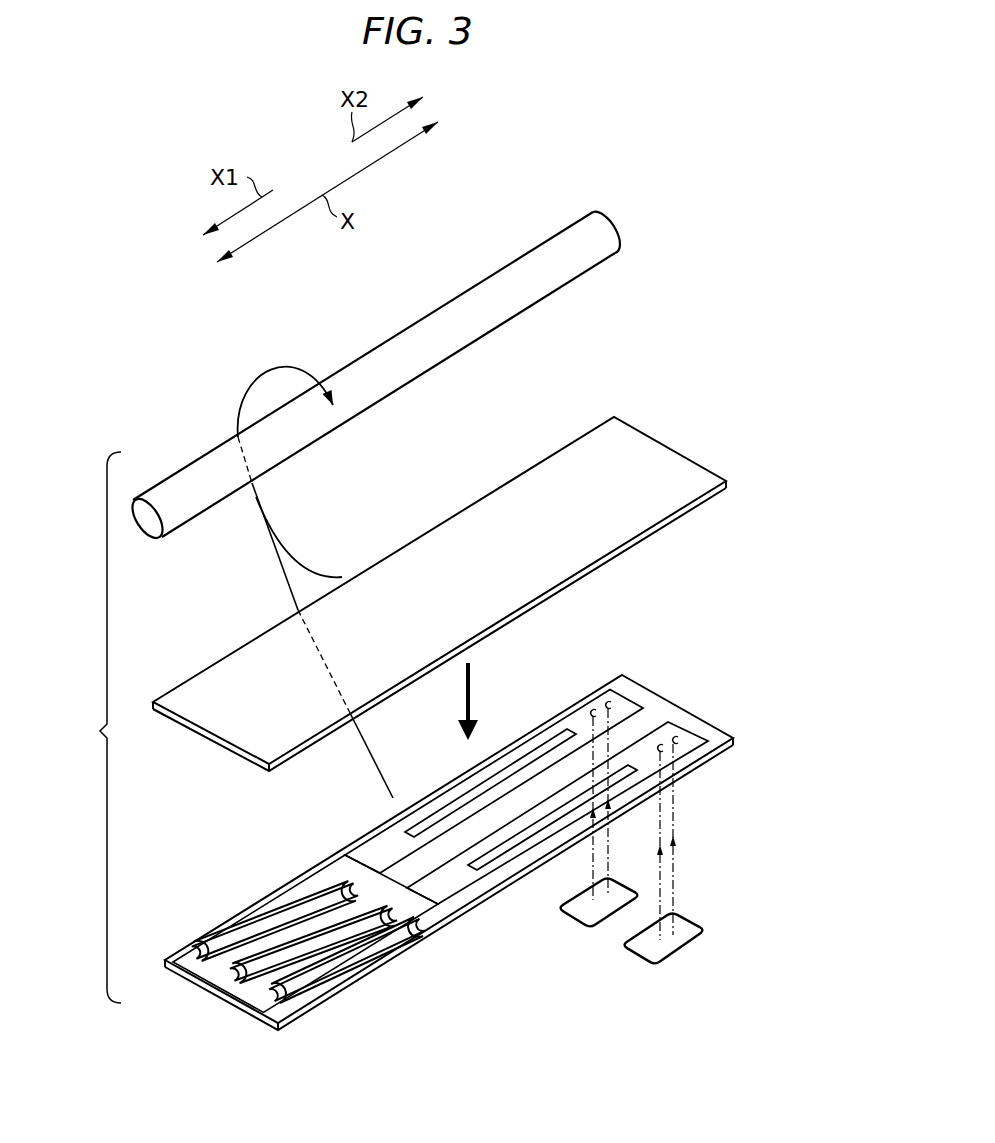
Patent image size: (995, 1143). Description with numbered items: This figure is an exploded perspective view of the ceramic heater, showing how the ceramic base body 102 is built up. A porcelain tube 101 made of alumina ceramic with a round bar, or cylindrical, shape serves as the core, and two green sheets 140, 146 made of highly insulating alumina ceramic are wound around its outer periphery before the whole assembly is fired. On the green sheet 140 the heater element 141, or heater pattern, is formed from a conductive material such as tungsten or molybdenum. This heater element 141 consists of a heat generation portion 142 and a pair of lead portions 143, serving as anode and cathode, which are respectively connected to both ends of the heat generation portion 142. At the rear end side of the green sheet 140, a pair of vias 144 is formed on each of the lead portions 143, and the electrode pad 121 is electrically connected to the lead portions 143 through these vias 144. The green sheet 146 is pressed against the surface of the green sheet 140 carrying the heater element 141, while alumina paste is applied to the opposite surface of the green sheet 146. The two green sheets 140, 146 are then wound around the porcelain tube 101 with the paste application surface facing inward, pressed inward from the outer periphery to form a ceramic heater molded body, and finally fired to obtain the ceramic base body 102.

The porcelain tube 101 is at (412, 342).
The ceramic base body 102 is at (89, 727).
The electrode pad 121 is at (638, 938).
The green sheet 140 is at (667, 707).
The heater element 141 is at (460, 873).
The heat generation portion 142 is at (310, 983).
The lead portions 143 is at (407, 845).
The vias 144 is at (594, 711).
The green sheet 146 is at (653, 451).